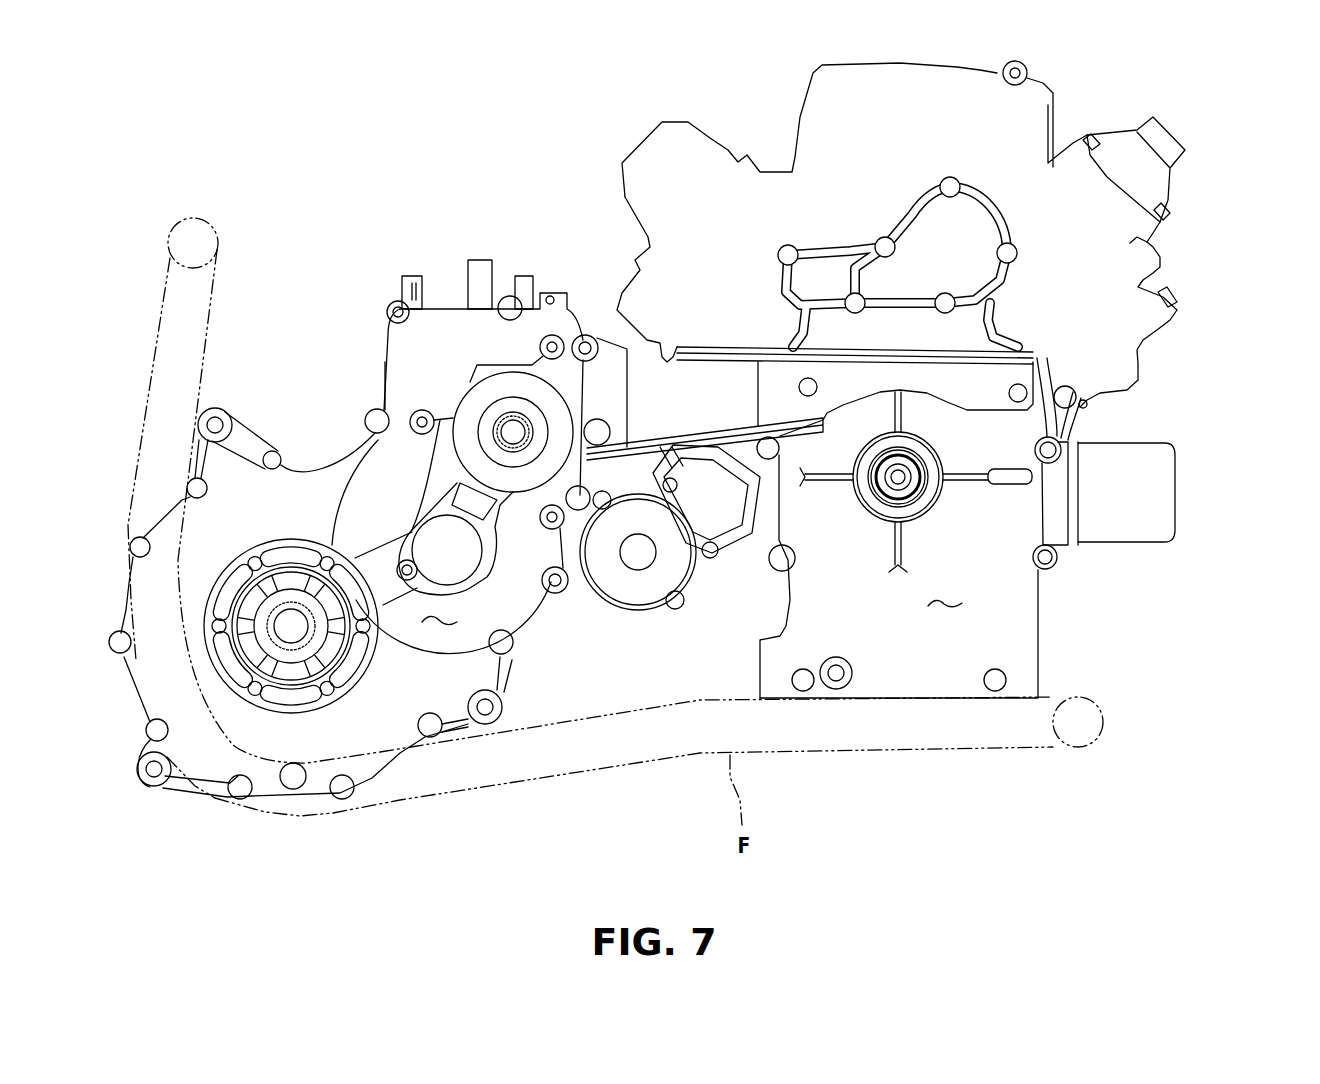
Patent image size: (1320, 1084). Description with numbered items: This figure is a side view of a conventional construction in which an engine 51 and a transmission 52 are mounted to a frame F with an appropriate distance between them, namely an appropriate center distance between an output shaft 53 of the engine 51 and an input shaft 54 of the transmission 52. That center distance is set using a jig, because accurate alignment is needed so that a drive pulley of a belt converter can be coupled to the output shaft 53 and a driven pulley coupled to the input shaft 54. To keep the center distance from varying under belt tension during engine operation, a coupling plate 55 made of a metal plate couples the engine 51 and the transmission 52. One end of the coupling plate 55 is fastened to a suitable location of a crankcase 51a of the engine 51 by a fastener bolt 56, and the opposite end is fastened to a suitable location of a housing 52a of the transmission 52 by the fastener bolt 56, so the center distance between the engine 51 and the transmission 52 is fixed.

The engine 51 is at (925, 848).
The crankcase 51a is at (943, 610).
The transmission 52 is at (600, 837).
The housing 52a is at (439, 627).
The output shaft 53 is at (917, 488).
The input shaft 54 is at (512, 433).
The coupling plate 55 is at (702, 75).
The fastener bolt 56 is at (587, 335).